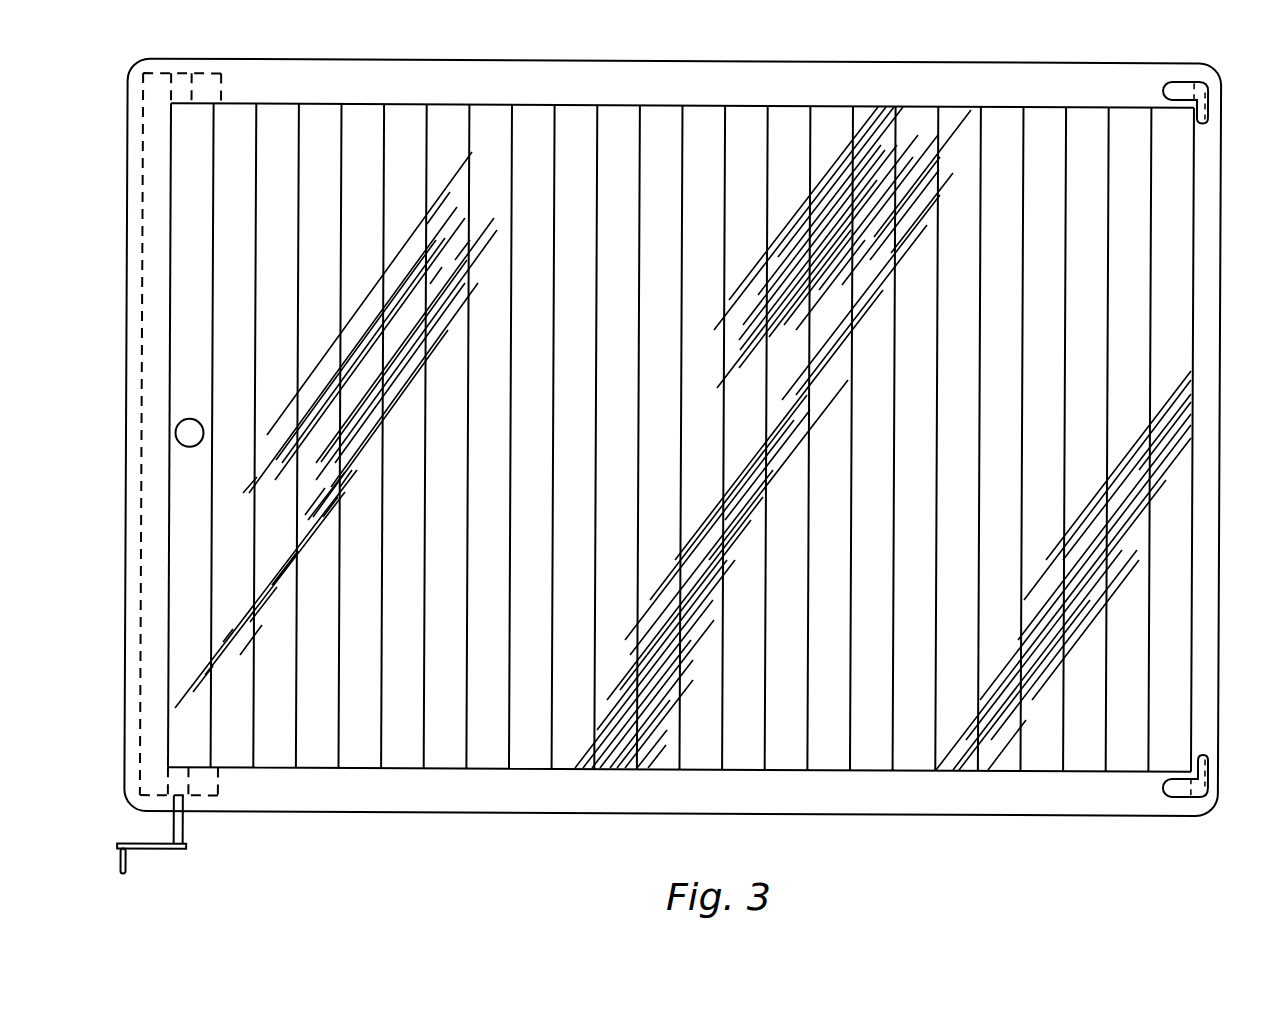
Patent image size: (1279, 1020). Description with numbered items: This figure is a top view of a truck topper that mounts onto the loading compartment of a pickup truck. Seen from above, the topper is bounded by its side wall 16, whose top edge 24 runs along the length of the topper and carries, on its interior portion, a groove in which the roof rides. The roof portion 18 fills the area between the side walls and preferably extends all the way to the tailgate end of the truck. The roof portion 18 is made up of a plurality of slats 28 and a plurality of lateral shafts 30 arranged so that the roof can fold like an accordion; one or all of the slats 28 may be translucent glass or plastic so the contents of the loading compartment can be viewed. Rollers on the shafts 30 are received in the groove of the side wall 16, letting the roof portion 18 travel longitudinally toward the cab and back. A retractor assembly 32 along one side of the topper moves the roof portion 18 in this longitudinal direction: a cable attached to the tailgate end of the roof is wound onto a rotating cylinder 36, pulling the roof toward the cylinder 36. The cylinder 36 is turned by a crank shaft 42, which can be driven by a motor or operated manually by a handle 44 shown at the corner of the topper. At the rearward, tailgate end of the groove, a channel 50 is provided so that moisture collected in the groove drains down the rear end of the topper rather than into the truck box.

The side wall 16 is at (997, 61).
The roof portion 18 is at (690, 418).
The top edge 24 is at (714, 77).
The slats 28 is at (372, 163).
The lateral shafts 30 is at (427, 130).
The retractor assembly 32 is at (140, 291).
The cylinder 36 is at (168, 781).
The crank shaft 42 is at (150, 850).
The handle 44 is at (119, 859).
The channel 50 is at (1201, 93).